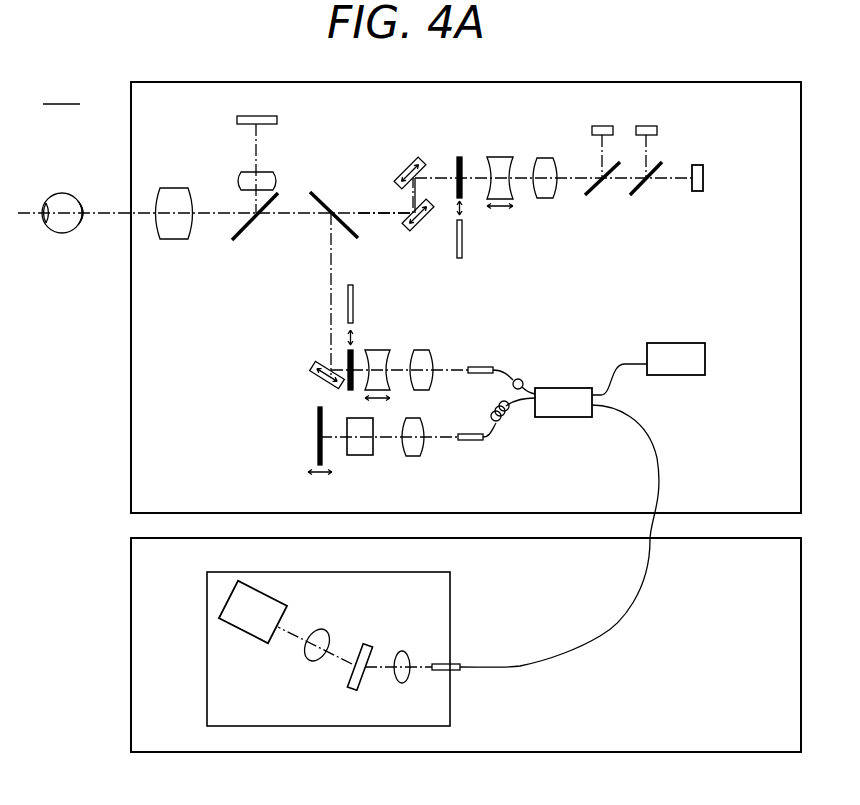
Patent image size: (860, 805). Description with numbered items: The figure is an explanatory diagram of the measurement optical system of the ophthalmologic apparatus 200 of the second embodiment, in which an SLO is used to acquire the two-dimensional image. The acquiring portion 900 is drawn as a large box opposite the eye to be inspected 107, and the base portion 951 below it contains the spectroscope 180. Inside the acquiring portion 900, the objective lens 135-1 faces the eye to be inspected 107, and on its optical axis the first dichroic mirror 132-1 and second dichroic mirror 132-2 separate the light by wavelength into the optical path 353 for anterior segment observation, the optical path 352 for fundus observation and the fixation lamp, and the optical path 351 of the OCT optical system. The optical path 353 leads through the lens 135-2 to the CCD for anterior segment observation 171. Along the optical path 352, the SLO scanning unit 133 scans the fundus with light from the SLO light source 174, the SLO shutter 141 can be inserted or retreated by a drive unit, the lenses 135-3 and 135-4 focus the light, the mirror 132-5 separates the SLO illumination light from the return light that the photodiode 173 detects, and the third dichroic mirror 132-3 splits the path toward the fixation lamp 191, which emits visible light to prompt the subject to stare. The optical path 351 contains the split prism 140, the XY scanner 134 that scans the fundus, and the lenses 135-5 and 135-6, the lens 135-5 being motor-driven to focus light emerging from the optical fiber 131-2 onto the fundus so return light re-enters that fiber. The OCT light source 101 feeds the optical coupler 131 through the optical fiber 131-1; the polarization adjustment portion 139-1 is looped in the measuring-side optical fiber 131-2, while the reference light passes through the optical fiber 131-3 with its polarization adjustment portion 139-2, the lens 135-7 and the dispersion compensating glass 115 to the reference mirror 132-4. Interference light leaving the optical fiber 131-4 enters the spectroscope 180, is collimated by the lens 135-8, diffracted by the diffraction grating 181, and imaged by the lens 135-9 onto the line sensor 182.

The ophthalmologic apparatus 200 is at (61, 92).
The acquiring portion 900 is at (131, 151).
The base portion 951 is at (131, 605).
The spectroscope 180 is at (207, 585).
The eye to be inspected 107 is at (62, 234).
The objective lens 135-1 is at (172, 241).
The first dichroic mirror 132-1 is at (244, 236).
The CCD for anterior segment observation 171 is at (237, 120).
The optical path for anterior segment observation 353 is at (256, 143).
The lens 135-2 is at (237, 178).
The second dichroic mirror 132-2 is at (313, 192).
The optical path of OCT optical system 351 is at (331, 243).
The optical path for fundus observation and fixation lamp 352 is at (372, 212).
The SLO scanning unit 133 is at (402, 166).
The SLO shutter 141 is at (457, 157).
The lens 135-3 is at (496, 157).
The lens 135-4 is at (545, 158).
The photodiode 173 is at (602, 126).
The mirror 132-5 is at (595, 196).
The SLO light source 174 is at (657, 131).
The third dichroic mirror 132-3 is at (647, 192).
The fixation lamp 191 is at (703, 177).
The split prism 140 is at (348, 358).
The XY scanner 134 is at (312, 368).
The lens 135-5 is at (394, 336).
The lens 135-6 is at (458, 326).
The optical fiber 131-2 is at (518, 344).
The polarization adjustment portion on the measuring light side 139-1 is at (523, 380).
The optical coupler 131 is at (563, 403).
The OCT light source 101 is at (676, 360).
The optical fiber 131-1 is at (614, 368).
The optical fiber 131-4 is at (633, 423).
The optical fiber 131-3 is at (522, 405).
The polarization adjustment portion on the reference light side 139-2 is at (494, 411).
The reference mirror 132-4 is at (318, 424).
The dispersion compensating glass 115 is at (353, 456).
The lens 135-7 is at (413, 457).
The line sensor 182 is at (253, 612).
The lens 135-9 is at (310, 660).
The diffraction grating 181 is at (365, 645).
The lens 135-8 is at (402, 683).